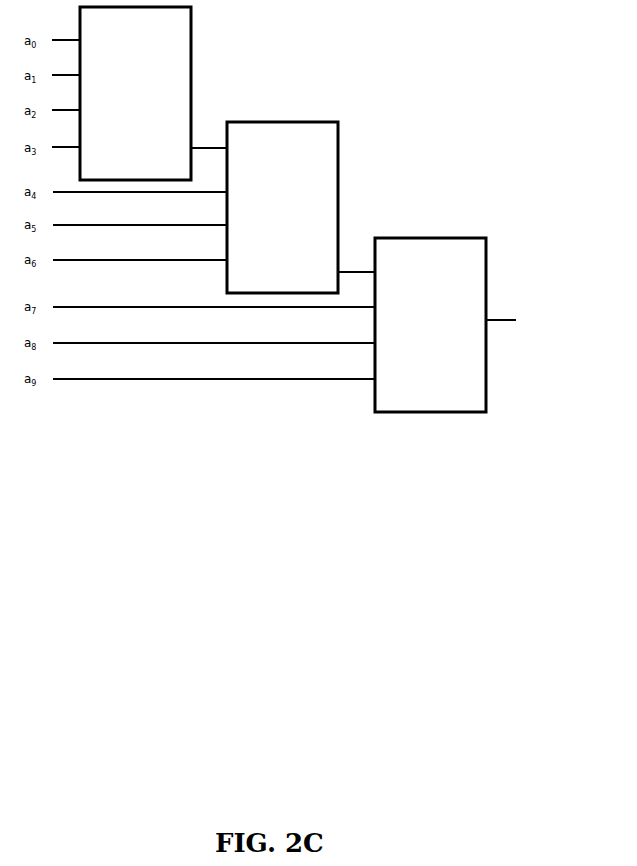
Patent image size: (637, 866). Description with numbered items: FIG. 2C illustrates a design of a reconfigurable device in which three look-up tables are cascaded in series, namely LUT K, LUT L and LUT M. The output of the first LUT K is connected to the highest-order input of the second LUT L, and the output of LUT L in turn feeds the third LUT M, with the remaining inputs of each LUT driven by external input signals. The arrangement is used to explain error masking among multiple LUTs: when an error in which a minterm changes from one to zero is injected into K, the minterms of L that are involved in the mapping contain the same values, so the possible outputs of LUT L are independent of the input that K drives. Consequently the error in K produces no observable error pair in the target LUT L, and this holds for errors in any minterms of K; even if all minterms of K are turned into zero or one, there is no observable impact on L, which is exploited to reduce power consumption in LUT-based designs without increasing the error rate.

The LUT K is at (139, 93).
The LUT L is at (214, 207).
The LUT M is at (284, 325).